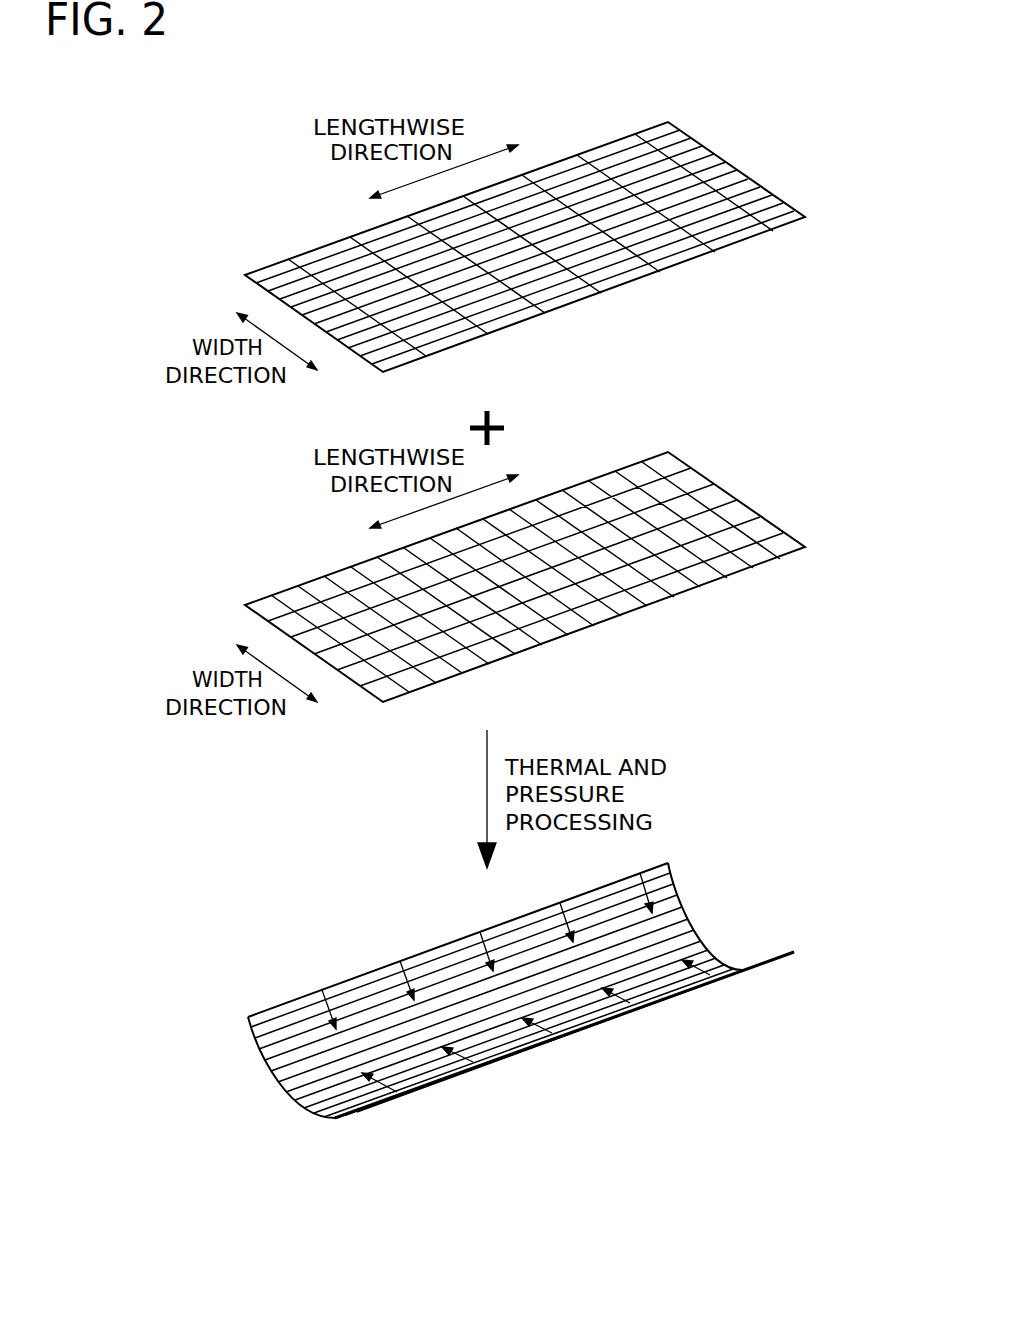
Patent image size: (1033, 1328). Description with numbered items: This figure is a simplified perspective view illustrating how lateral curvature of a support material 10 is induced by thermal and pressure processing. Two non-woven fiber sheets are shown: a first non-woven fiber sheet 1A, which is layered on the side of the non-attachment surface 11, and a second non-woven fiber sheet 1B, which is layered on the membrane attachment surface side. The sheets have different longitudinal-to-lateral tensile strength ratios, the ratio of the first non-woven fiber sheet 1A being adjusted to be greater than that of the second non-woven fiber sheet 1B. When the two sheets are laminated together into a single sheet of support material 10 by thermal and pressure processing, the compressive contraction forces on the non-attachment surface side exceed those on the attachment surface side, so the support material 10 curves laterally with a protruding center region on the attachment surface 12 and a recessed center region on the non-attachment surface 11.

The first non-woven fiber sheet 1A is at (230, 207).
The second non-woven fiber sheet 1B is at (230, 544).
The support material 10 is at (449, 1059).
The non-attachment surface 11 is at (366, 1050).
The attachment surface 12 is at (365, 1153).